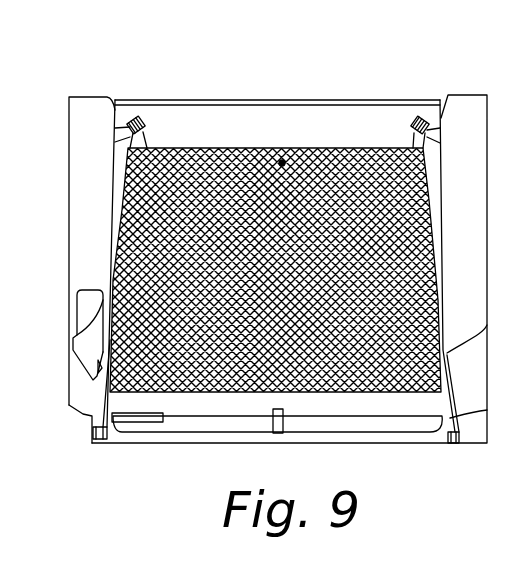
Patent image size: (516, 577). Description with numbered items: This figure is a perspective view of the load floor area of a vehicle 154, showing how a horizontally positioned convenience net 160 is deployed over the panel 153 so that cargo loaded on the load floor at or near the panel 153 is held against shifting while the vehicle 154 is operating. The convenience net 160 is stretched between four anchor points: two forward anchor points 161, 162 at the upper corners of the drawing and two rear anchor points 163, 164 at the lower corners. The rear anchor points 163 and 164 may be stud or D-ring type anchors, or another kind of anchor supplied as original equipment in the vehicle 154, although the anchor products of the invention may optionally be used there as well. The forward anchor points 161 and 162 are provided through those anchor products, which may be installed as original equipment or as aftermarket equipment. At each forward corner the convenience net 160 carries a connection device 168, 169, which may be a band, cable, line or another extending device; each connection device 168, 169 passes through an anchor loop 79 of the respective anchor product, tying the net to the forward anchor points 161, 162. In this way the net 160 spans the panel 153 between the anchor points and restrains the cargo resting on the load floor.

The anchor loop 79 is at (132, 118).
The panel 153 is at (236, 120).
The vehicle 154 is at (107, 110).
The convenience net 160 is at (282, 163).
The forward anchor point 161 is at (148, 118).
The forward anchor point 162 is at (413, 117).
The rear anchor point 163 is at (104, 438).
The rear anchor point 164 is at (452, 443).
The connection device 168 is at (147, 145).
The connection device 169 is at (413, 143).